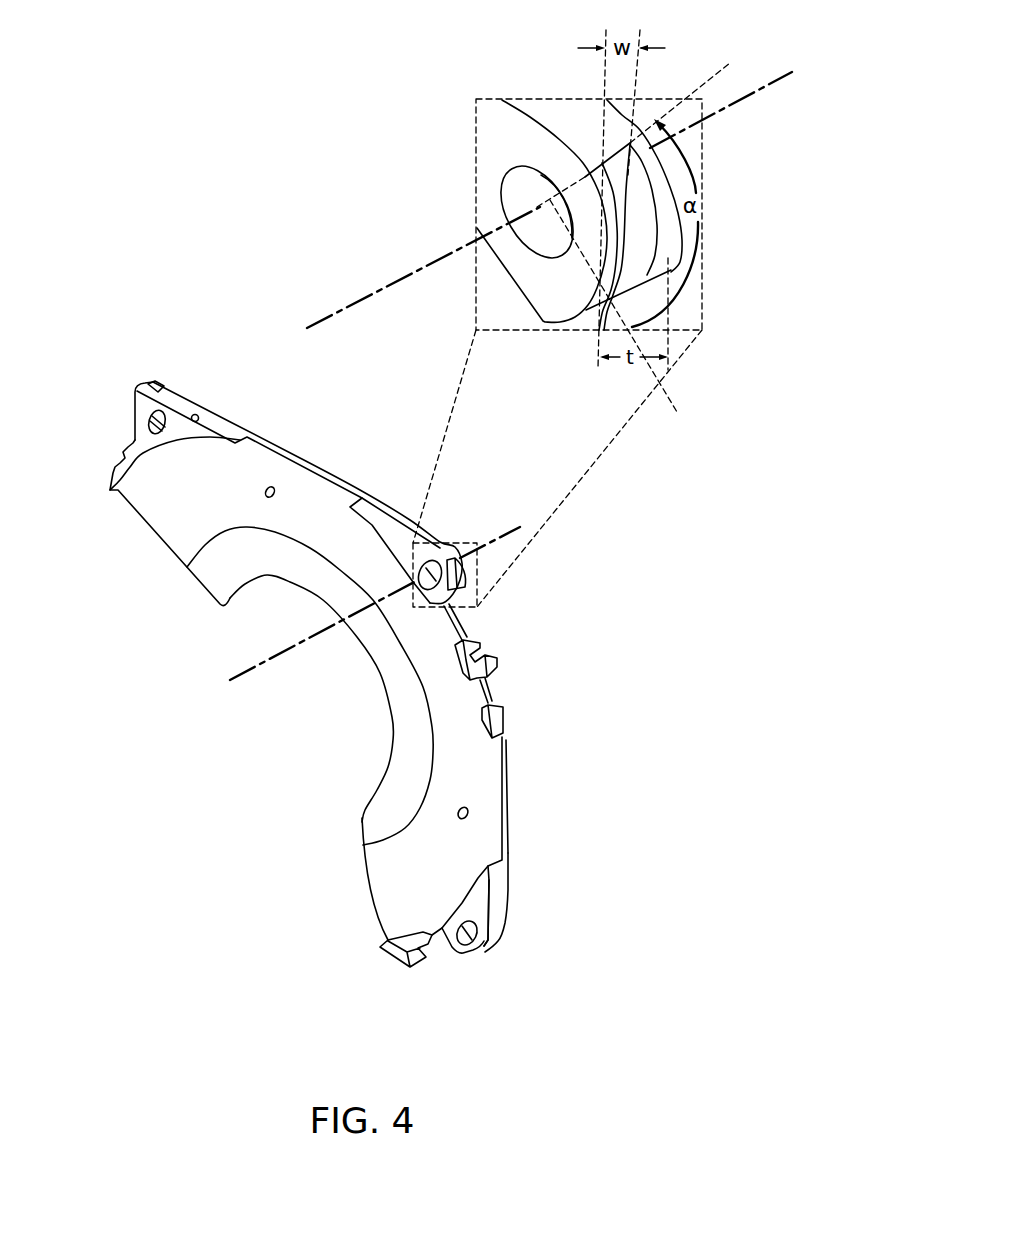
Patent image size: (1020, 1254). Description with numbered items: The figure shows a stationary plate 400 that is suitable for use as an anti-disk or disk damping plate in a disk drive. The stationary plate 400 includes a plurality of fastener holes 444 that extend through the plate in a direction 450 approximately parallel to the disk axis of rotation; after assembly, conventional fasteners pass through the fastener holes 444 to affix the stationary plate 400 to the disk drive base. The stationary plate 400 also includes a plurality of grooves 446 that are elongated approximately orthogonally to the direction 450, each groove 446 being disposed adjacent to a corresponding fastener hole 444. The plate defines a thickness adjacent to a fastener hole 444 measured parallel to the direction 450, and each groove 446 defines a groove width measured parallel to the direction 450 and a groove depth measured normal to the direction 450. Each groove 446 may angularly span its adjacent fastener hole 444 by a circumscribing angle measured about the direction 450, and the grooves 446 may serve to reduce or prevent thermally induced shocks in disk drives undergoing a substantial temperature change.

The stationary plate 400 is at (213, 748).
The fastener holes 444 is at (155, 430).
The grooves 446 is at (146, 385).
The direction 450 is at (251, 672).